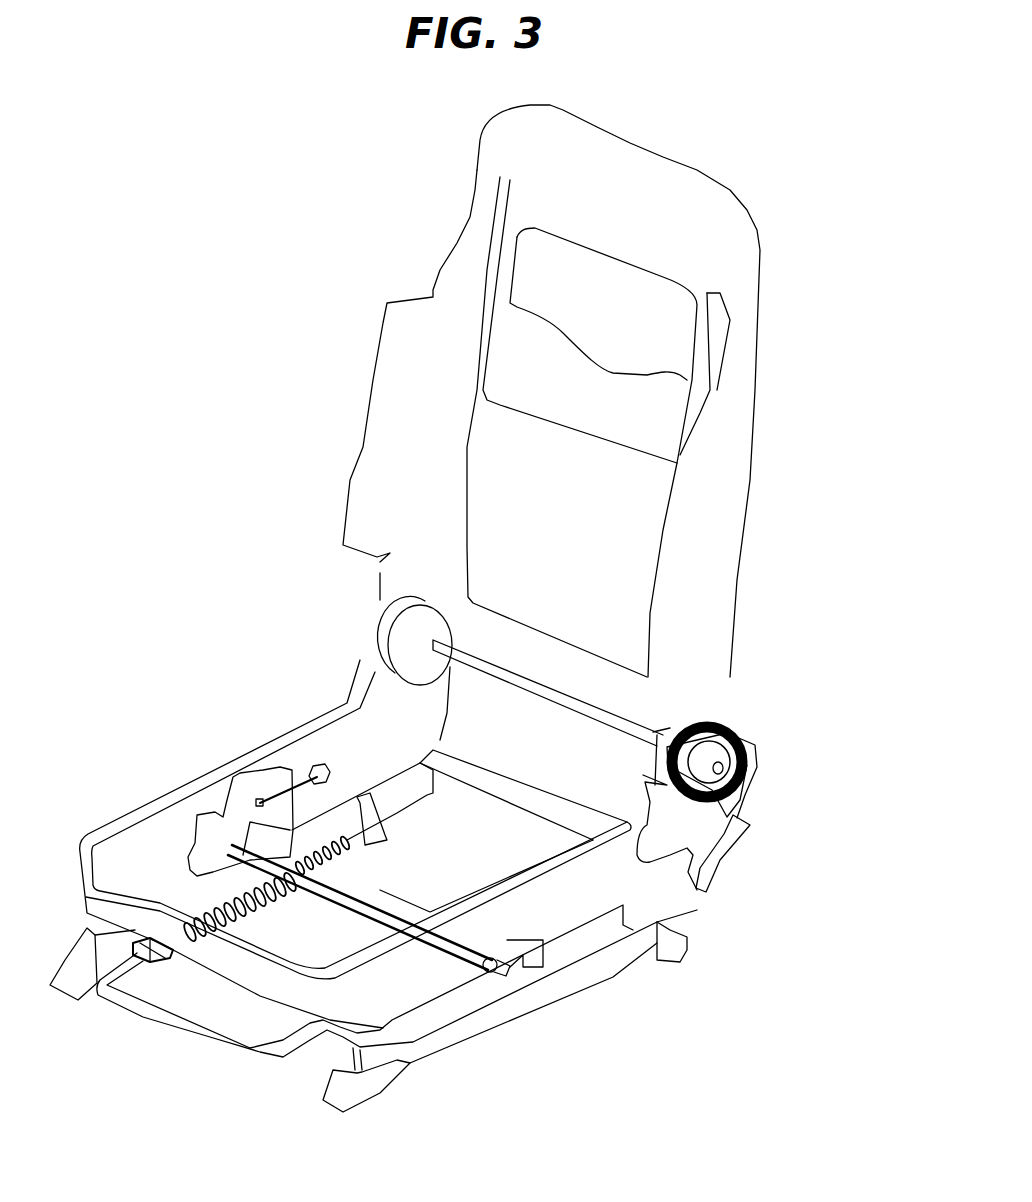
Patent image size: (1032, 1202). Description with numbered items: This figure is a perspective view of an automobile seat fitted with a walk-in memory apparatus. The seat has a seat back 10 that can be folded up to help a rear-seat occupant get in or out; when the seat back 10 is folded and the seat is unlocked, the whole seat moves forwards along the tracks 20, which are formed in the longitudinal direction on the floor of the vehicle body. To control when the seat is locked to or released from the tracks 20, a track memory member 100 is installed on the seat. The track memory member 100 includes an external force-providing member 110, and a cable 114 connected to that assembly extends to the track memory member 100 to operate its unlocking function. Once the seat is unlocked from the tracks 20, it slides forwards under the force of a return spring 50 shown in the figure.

The seat back 10 is at (720, 463).
The tracks 20 is at (483, 1027).
The return spring 50 is at (186, 850).
The track memory member 100 is at (230, 772).
The external force-providing member 110 is at (749, 731).
The cable 114 is at (303, 785).